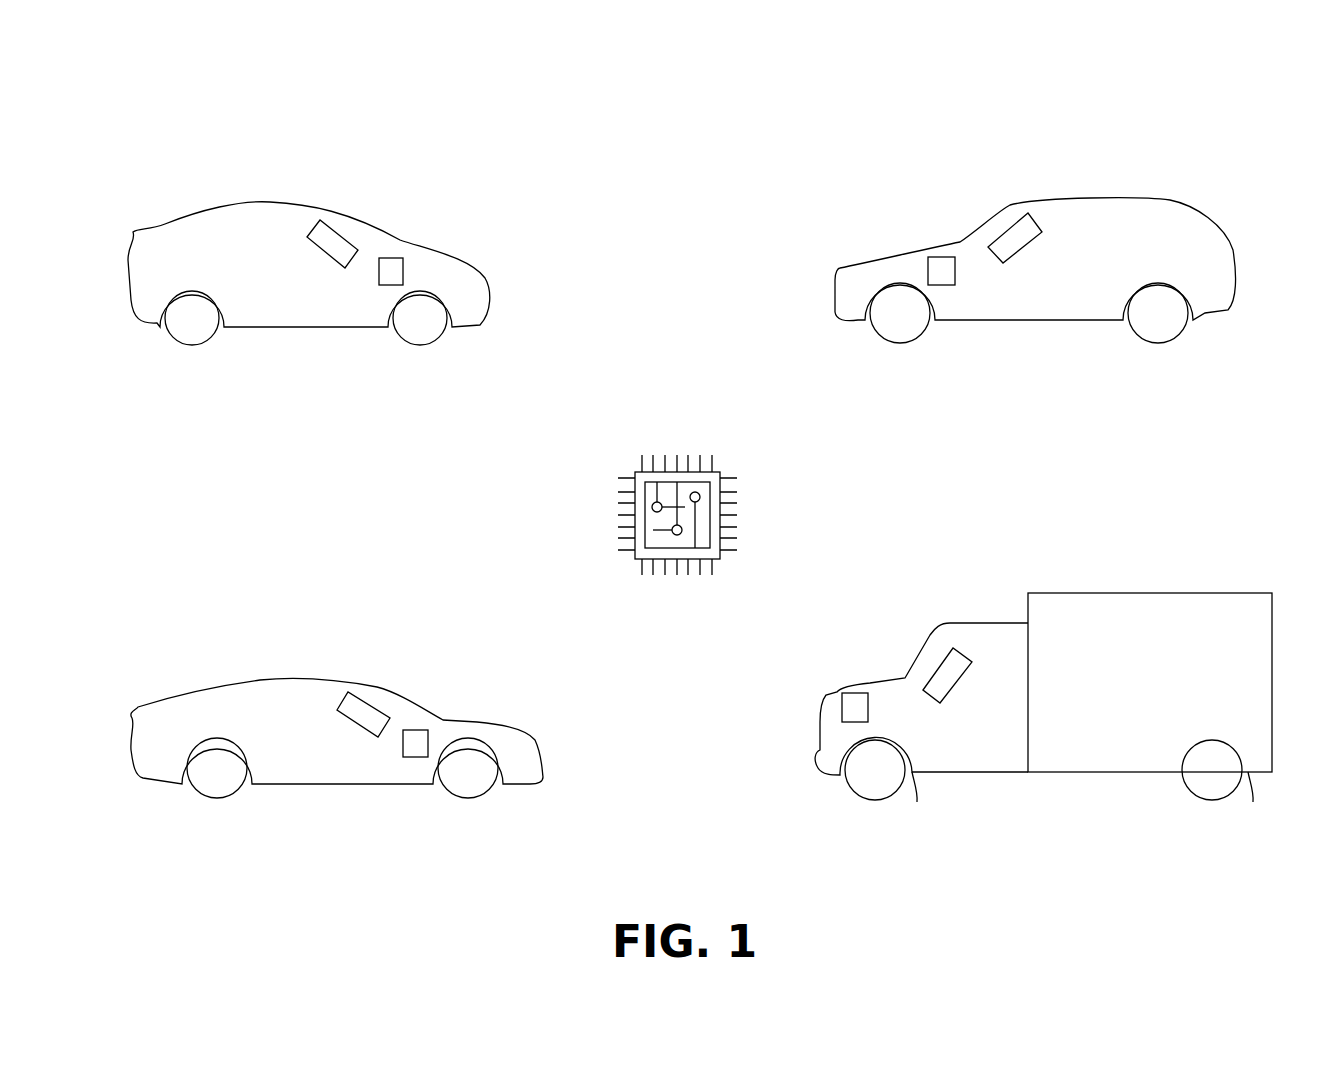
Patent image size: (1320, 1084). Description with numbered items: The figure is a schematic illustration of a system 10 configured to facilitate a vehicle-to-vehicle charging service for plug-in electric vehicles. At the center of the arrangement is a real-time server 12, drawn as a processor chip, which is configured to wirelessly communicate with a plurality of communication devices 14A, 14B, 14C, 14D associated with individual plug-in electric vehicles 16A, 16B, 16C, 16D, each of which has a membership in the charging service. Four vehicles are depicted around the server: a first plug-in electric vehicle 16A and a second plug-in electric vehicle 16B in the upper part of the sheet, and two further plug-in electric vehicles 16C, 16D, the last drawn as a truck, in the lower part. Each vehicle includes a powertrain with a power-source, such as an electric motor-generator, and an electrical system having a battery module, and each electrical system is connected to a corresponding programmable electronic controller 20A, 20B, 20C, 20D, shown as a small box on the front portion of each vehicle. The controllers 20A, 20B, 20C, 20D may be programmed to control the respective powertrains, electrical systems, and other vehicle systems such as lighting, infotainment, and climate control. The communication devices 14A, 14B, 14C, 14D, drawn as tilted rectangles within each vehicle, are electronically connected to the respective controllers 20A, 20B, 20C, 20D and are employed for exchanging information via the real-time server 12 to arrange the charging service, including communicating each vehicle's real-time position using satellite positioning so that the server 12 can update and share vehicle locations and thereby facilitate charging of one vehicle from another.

The system 10 is at (743, 155).
The real-time server 12 is at (720, 472).
The communication device 14A is at (320, 253).
The communication device 14B is at (1022, 252).
The communication device 14C is at (355, 725).
The communication device 14D is at (958, 683).
The first plug-in electric vehicle 16A is at (310, 208).
The second plug-in electric vehicle 16B is at (1178, 203).
The plug-in electric vehicle 16C is at (333, 678).
The plug-in electric vehicle 16D is at (1203, 593).
The programmable electronic controller 20A is at (391, 258).
The programmable electronic controller 20B is at (940, 257).
The programmable electronic controller 20C is at (415, 730).
The programmable electronic controller 20D is at (855, 693).